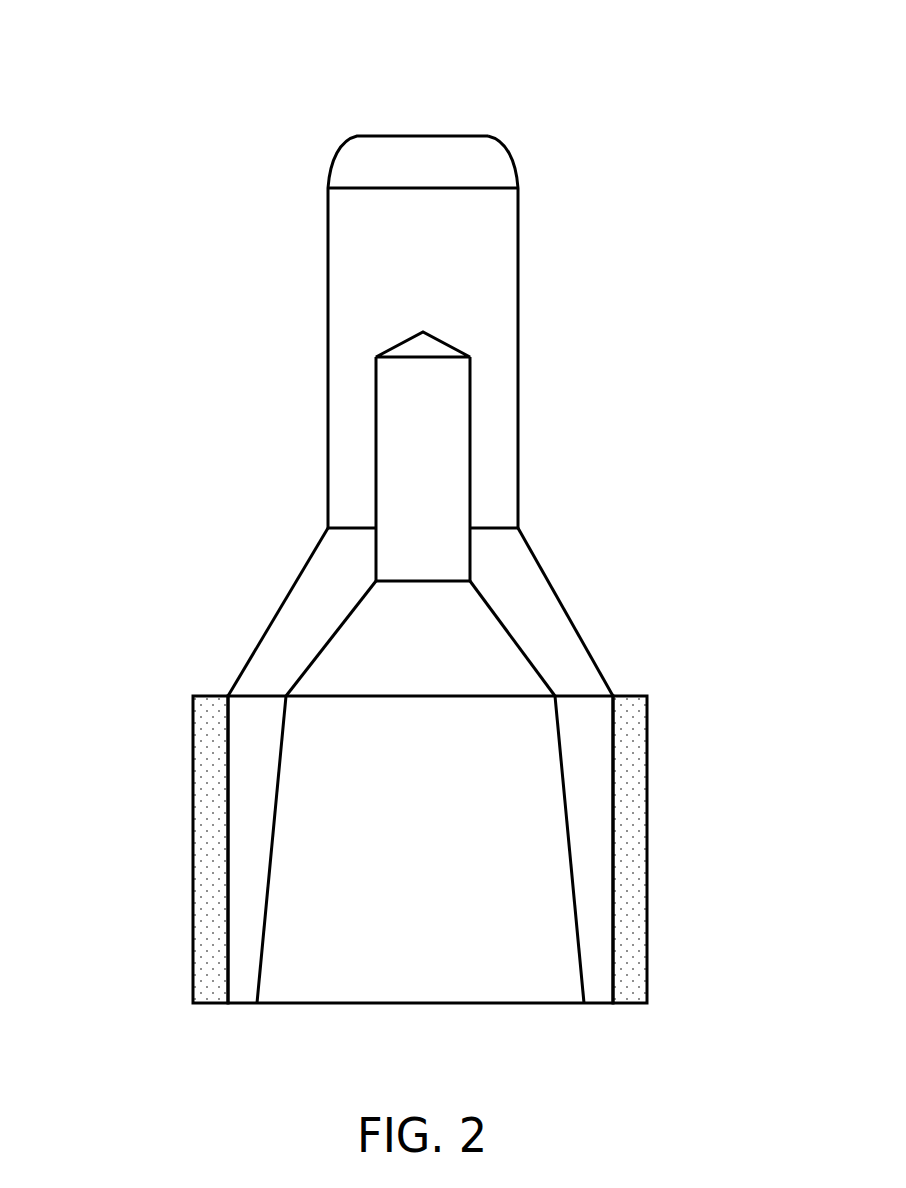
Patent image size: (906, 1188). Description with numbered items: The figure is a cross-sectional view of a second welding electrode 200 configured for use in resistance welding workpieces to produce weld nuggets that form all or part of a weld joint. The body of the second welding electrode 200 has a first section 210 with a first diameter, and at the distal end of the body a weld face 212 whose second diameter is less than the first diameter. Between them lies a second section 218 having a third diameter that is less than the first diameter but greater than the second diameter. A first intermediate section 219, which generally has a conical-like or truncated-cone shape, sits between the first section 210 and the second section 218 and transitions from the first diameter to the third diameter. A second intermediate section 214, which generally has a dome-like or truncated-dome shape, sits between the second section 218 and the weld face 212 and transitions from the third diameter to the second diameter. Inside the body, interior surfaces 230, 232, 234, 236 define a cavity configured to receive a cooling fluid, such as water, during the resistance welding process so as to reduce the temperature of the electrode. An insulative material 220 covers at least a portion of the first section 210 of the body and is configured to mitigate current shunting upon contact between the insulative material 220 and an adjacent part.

The second welding electrode 200 is at (104, 87).
The first section 210 is at (613, 869).
The weld face 212 is at (445, 135).
The second intermediate section 214 is at (513, 157).
The second section 218 is at (518, 338).
The first intermediate section 219 is at (583, 641).
The insulative material 220 is at (193, 808).
The interior surface 230 is at (271, 852).
The interior surface 232 is at (450, 350).
The interior surface 234 is at (378, 562).
The interior surface 236 is at (523, 652).